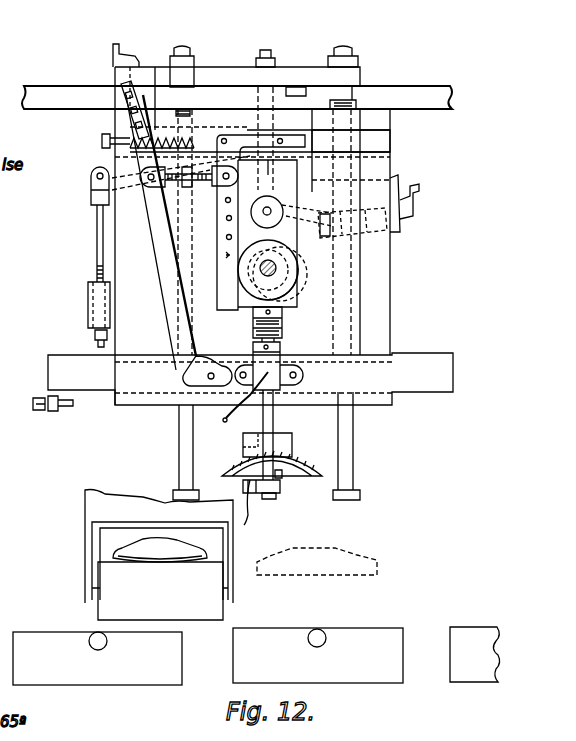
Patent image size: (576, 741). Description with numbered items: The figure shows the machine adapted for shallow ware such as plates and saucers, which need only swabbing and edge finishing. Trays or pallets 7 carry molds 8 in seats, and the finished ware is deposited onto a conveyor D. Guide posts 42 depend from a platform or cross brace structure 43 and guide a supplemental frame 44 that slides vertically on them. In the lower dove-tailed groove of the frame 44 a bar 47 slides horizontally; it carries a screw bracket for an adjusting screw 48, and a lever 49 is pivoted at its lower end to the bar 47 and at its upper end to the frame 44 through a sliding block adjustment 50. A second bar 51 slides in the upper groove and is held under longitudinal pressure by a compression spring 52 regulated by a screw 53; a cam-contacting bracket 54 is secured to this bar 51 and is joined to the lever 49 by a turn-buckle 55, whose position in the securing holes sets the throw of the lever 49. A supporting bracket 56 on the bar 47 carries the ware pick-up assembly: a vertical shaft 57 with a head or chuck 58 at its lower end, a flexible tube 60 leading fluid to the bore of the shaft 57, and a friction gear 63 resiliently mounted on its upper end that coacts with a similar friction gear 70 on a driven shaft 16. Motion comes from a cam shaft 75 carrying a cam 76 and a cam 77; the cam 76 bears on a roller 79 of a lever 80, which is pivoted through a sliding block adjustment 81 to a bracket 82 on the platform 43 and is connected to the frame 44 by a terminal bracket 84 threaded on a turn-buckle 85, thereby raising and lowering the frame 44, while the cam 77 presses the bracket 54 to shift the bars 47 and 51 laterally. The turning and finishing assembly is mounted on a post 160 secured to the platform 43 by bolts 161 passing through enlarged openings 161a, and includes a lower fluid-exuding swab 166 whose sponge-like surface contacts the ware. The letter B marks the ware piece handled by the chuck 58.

The tray or pallet 7 is at (392, 681).
The mold 8 is at (378, 568).
The shaft 16 is at (284, 480).
The guide post 42 is at (180, 438).
The platform or cross brace structure 43 is at (320, 66).
The supplemental frame 44 is at (390, 303).
The bar 47 is at (446, 374).
The adjusting screw 48 is at (38, 411).
The lever 49 is at (165, 283).
The sliding block adjustment 50 is at (136, 102).
The bar 51 is at (360, 140).
The compression spring 52 is at (162, 127).
The screw 53 is at (105, 134).
The cam-contacting bracket 54 is at (243, 142).
The turn-buckle 55 is at (185, 189).
The supporting bracket 56 is at (303, 375).
The shaft 57 is at (275, 418).
The head or chuck 58 is at (293, 446).
The flexible tube 60 is at (292, 147).
The friction gear 63 is at (292, 302).
The friction gear 70 is at (238, 245).
The cam shaft 75 is at (277, 264).
The cam 76 is at (305, 276).
The cam 77 is at (292, 290).
The roller 79 is at (271, 208).
The lever 80 is at (291, 212).
The sliding block adjustment 81 is at (389, 239).
The bracket 82 is at (393, 198).
The terminal bracket 84 is at (91, 189).
The turn-buckle 85 is at (98, 254).
The post 160 is at (260, 96).
The bolt 161 is at (270, 58).
The enlarged opening 161a is at (256, 78).
The lower swab 166 is at (268, 498).
The heel breast B is at (299, 469).
The conveyor D is at (200, 621).